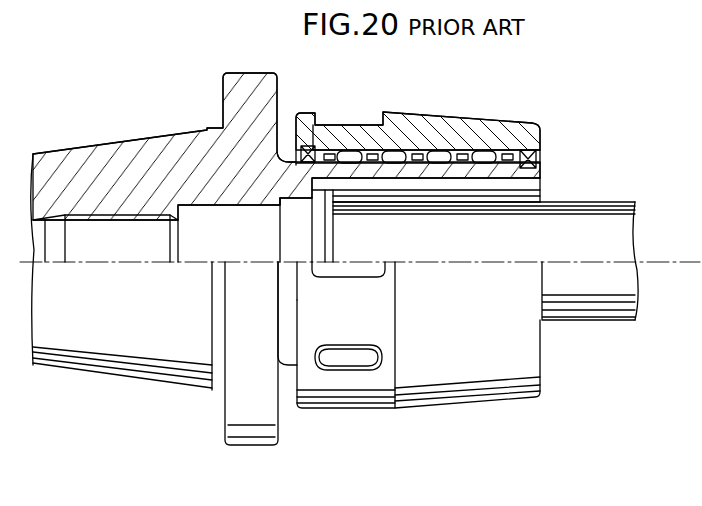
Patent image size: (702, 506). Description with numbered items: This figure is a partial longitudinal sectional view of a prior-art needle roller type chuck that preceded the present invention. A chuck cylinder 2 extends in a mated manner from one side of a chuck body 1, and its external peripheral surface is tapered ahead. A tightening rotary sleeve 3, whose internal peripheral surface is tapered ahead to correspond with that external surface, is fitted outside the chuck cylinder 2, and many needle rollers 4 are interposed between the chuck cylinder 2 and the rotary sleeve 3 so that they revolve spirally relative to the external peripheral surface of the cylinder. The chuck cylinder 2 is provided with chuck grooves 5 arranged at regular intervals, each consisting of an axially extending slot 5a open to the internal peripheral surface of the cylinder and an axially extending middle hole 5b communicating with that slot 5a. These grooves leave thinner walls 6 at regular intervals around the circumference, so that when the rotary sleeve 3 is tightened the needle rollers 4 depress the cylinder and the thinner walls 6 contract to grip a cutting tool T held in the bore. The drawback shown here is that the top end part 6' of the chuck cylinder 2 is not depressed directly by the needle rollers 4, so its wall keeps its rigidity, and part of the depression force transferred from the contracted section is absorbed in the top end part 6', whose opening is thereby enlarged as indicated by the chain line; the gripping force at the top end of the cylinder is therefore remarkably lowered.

The chuck body 1 is at (250, 168).
The chuck cylinder 2 is at (408, 168).
The tightening rotary sleeve 3 is at (393, 128).
The needle rollers 4 is at (497, 165).
The chuck grooves 5 is at (495, 296).
The axially extending slots 5a is at (427, 197).
The axially extending middle holes 5b is at (483, 183).
The thinner walls 6 is at (419, 126).
The top end part 6' is at (549, 147).
The tool T is at (577, 215).